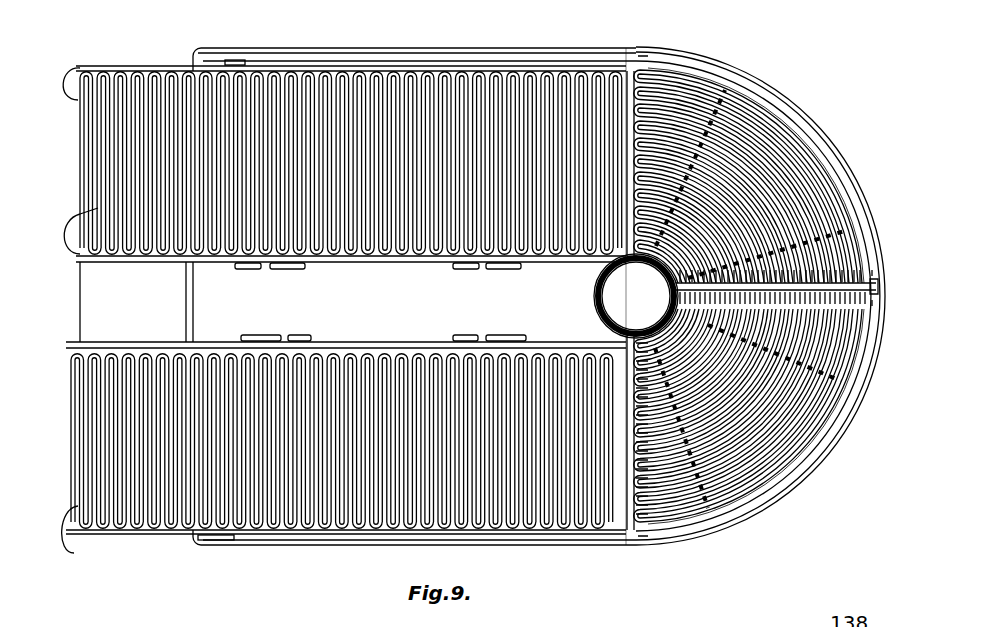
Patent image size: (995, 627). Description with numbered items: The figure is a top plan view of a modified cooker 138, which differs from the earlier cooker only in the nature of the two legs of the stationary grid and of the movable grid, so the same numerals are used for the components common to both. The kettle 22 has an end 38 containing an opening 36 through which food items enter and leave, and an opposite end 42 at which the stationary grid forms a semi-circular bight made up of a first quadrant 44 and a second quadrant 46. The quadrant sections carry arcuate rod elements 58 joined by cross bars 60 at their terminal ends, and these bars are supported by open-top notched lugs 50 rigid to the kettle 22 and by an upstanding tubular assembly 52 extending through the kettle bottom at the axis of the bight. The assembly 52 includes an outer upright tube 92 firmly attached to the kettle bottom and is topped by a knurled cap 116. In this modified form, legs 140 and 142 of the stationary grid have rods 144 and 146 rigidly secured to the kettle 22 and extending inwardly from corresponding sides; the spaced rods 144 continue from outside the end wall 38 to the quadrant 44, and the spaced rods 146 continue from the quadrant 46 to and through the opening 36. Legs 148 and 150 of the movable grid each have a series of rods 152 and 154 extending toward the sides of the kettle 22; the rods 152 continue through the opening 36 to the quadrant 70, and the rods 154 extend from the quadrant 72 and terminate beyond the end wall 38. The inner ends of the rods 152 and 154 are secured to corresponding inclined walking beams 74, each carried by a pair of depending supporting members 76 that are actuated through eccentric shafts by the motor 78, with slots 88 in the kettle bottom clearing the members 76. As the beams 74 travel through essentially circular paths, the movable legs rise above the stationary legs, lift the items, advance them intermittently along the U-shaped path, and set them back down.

The kettle 22 is at (306, 542).
The opening 36 is at (191, 258).
The end 38 is at (196, 538).
The opposite end 42 is at (852, 384).
The first quadrant 44 is at (822, 426).
The second quadrant 46 is at (782, 100).
The notched lugs 50 is at (636, 48).
The tubular assembly 52 is at (594, 290).
The arcuate rod elements 58 is at (735, 78).
The cross bars 60 is at (850, 245).
The quadrant 70 is at (785, 455).
The quadrant 72 is at (790, 128).
The walking beams 74 is at (372, 328).
The supporting members 76 is at (248, 262).
The motor 78 is at (72, 296).
The slots 88 is at (296, 262).
The outer upright tube 92 is at (600, 300).
The knurled cap 116 is at (600, 280).
The cooker 138 is at (548, 546).
The leg 140 is at (118, 538).
The leg 142 is at (120, 56).
The rods 144 is at (378, 522).
The rods 146 is at (76, 60).
The leg 148 is at (104, 336).
The leg 150 is at (108, 258).
The rods 152 is at (70, 528).
The rods 154 is at (66, 243).